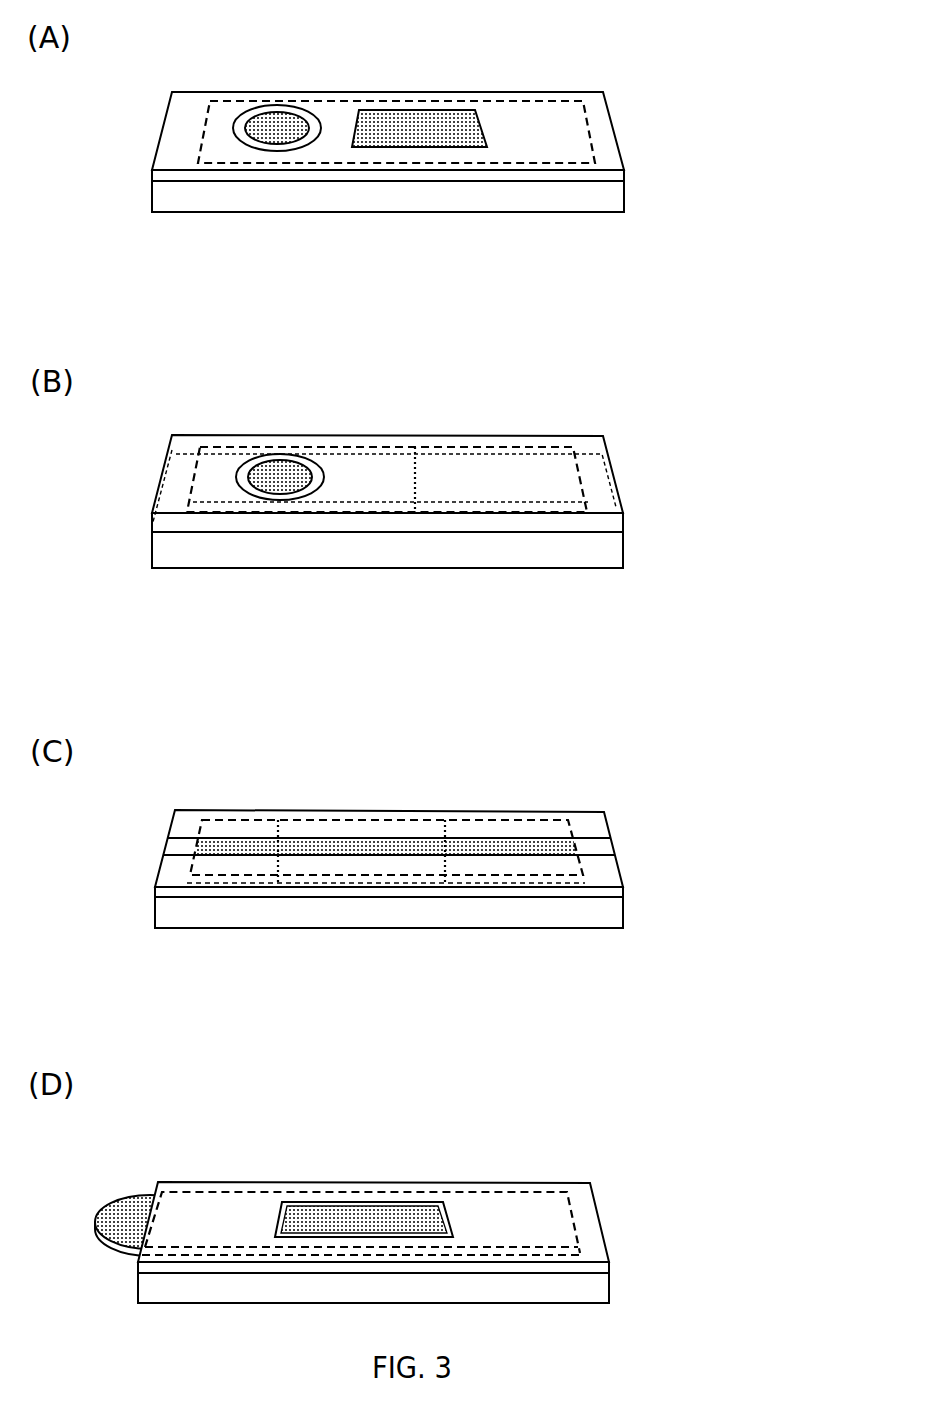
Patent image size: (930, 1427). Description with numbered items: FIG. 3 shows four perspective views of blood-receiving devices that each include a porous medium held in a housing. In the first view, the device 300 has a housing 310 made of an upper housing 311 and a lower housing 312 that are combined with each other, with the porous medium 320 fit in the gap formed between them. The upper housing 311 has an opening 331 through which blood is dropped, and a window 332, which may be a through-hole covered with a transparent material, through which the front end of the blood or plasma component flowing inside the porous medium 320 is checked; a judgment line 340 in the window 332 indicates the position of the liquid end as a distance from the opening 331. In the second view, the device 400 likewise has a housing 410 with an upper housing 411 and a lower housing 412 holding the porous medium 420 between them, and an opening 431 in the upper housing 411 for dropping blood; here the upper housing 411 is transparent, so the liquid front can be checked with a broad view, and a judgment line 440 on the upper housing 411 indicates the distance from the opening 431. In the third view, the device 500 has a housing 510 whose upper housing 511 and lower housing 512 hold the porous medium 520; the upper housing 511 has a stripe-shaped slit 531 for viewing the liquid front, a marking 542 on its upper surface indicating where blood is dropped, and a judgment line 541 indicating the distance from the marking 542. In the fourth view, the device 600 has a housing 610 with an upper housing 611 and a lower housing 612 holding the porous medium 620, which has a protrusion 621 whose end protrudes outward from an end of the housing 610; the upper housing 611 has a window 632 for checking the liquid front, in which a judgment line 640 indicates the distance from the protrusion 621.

The device 300 is at (486, 116).
The housing 310 is at (485, 181).
The upper housing 311 is at (625, 172).
The lower housing 312 is at (441, 200).
The porous medium 320 is at (558, 110).
The opening 331 is at (290, 86).
The window 332 is at (472, 83).
The judgment line 340 is at (419, 136).
The device 400 is at (486, 461).
The housing 410 is at (485, 527).
The upper housing 411 is at (623, 515).
The lower housing 412 is at (441, 549).
The porous medium 420 is at (558, 453).
The opening 431 is at (290, 429).
The judgment line 440 is at (422, 462).
The device 500 is at (456, 833).
The housing 510 is at (486, 898).
The upper housing 511 is at (623, 890).
The lower housing 512 is at (623, 920).
The porous medium 520 is at (558, 822).
The slit 531 is at (162, 845).
The judgment line 541 is at (450, 830).
The marking 542 is at (293, 830).
The device 600 is at (431, 1198).
The housing 610 is at (470, 1271).
The upper housing 611 is at (609, 1262).
The lower housing 612 is at (426, 1291).
The porous medium 620 is at (538, 1195).
The protrusion 621 is at (108, 1212).
The window 632 is at (433, 1168).
The judgment line 640 is at (366, 1230).